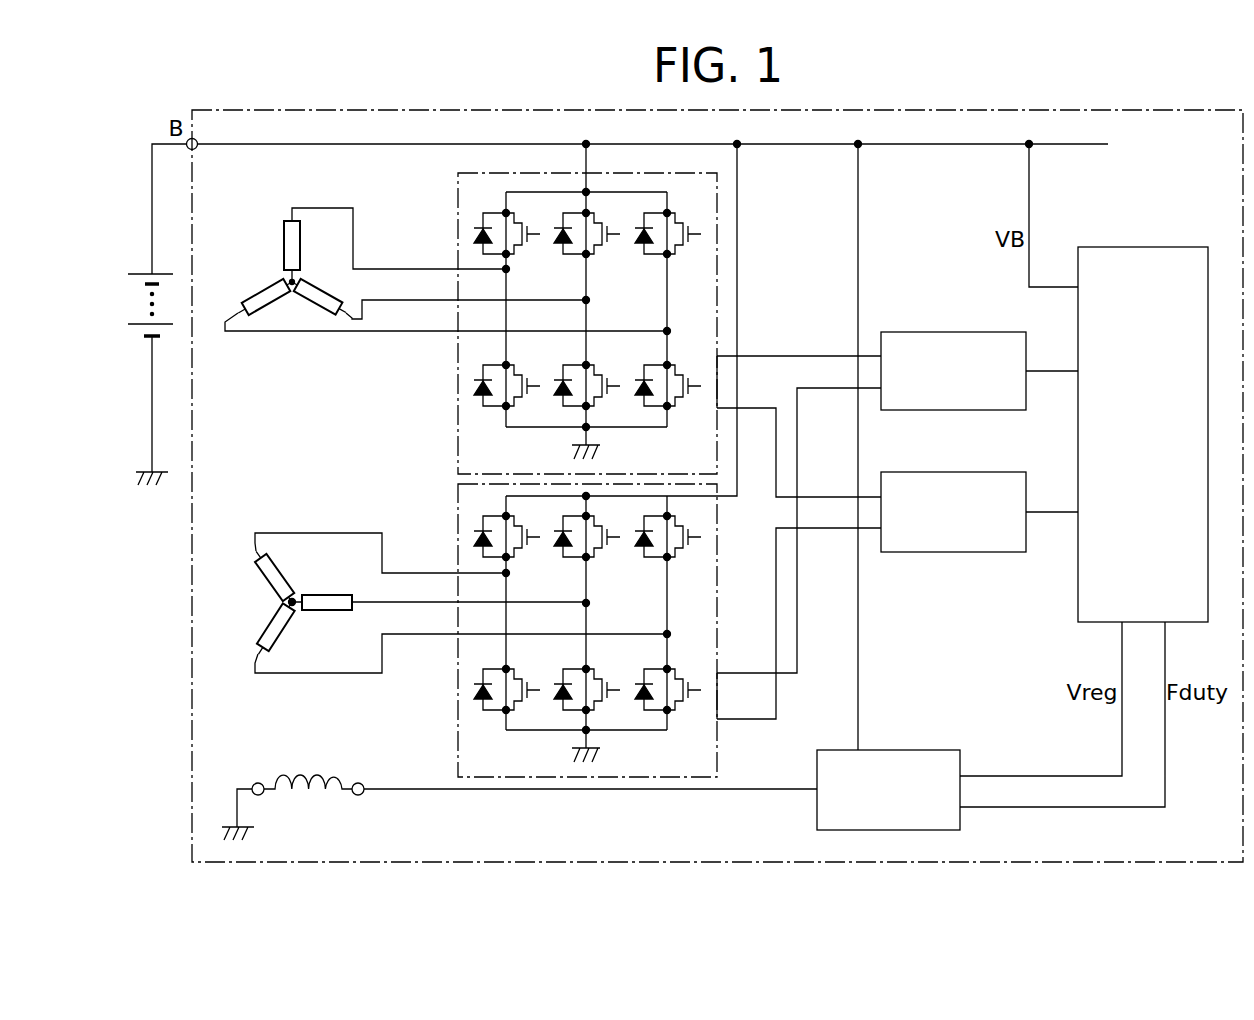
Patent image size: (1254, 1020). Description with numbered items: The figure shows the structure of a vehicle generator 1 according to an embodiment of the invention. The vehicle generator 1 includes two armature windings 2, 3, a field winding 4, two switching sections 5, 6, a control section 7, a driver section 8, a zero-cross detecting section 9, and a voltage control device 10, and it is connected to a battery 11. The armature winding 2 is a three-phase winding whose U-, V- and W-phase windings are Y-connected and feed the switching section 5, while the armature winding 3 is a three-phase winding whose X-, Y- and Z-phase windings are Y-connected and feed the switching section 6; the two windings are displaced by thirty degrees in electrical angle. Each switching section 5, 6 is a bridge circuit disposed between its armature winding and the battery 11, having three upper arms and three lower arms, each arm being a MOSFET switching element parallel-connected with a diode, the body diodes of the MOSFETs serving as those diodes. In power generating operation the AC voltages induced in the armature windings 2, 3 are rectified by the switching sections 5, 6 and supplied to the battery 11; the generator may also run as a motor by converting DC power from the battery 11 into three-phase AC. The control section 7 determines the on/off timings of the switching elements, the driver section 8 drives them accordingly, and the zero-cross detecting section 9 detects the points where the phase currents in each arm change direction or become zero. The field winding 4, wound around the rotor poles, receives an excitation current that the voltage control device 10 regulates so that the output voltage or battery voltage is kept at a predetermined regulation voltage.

The vehicle generator 1 is at (1143, 111).
The armature winding 2 is at (268, 265).
The armature winding 3 is at (262, 598).
The field winding 4 is at (310, 774).
The switching section 5 is at (458, 245).
The switching section 6 is at (458, 527).
The control section 7 is at (1152, 247).
The driver section 8 is at (975, 472).
The zero-cross detecting section 9 is at (975, 332).
The voltage control device 10 is at (918, 750).
The battery 11 is at (137, 273).